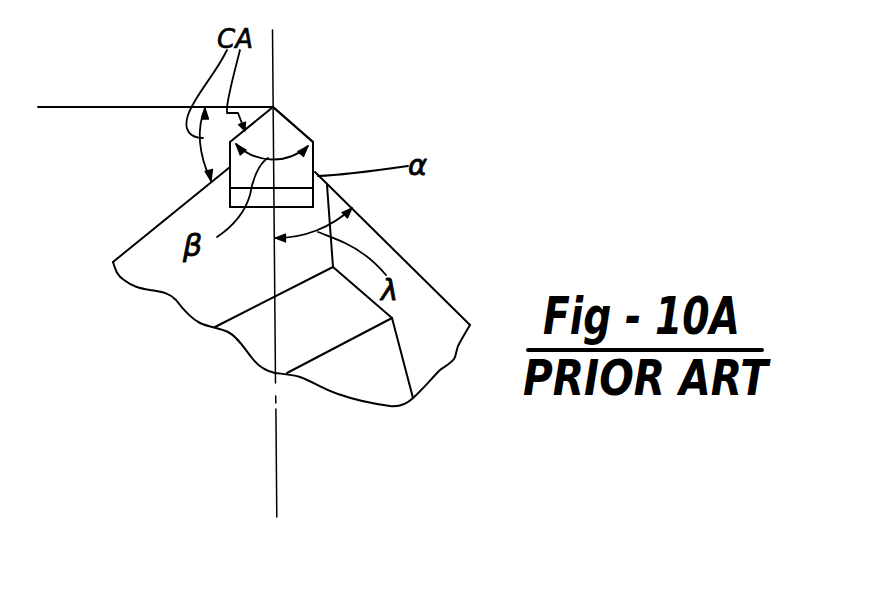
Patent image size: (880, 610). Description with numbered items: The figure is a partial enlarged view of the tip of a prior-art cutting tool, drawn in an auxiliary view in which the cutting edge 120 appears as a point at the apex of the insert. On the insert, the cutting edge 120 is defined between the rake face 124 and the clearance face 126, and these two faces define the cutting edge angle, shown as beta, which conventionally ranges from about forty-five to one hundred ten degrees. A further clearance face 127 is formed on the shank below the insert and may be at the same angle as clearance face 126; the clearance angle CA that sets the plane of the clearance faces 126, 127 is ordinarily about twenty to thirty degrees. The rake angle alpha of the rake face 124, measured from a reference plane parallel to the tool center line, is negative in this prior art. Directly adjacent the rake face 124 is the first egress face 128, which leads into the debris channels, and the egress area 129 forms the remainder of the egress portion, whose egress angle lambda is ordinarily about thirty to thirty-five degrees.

The cutting edge 120 is at (273, 107).
The rake face 124 is at (297, 130).
The clearance face 126 is at (230, 141).
The clearance face 127 is at (168, 219).
The first egress face 128 is at (280, 180).
The egress area 129 is at (397, 252).